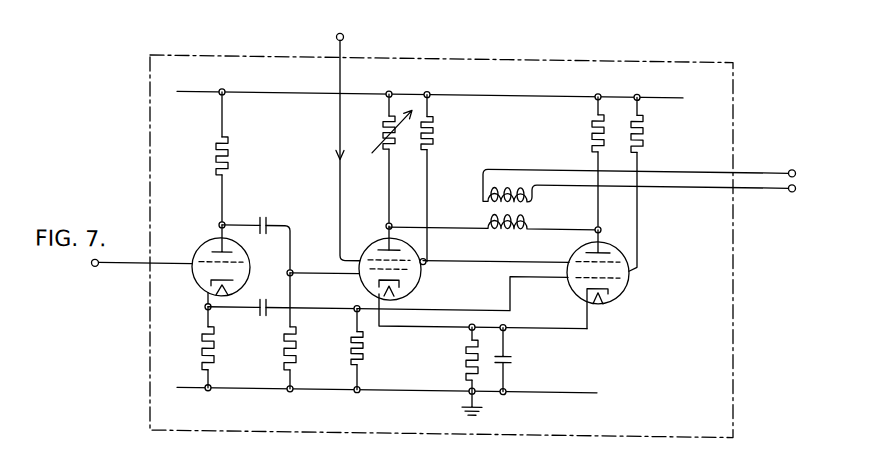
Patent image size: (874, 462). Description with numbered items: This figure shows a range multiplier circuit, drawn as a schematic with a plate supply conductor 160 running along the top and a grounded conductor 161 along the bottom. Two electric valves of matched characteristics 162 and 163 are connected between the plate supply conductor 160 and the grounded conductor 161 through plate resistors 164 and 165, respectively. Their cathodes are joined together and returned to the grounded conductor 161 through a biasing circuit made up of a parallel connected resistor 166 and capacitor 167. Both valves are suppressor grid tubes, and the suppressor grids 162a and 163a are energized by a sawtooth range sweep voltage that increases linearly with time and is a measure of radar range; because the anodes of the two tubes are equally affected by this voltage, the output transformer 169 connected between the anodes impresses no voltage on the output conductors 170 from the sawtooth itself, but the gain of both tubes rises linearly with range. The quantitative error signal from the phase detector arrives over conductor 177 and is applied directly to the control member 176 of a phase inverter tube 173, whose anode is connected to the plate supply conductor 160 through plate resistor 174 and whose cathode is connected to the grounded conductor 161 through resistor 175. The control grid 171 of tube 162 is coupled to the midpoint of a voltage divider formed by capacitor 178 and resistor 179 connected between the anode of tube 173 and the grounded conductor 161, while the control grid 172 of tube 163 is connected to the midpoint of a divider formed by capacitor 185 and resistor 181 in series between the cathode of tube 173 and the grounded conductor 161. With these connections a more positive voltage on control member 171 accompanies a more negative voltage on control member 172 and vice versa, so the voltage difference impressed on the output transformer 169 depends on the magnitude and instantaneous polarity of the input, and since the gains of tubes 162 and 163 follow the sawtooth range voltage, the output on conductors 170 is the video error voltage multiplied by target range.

The plate supply conductor 160 is at (280, 91).
The grounded conductor 161 is at (248, 388).
The electric valve 162 is at (422, 280).
The suppressor grid 162a is at (373, 250).
The electric valve 163 is at (622, 284).
The suppressor grid 163a is at (573, 254).
The plate resistor 164 is at (393, 178).
The plate resistor 165 is at (590, 130).
The resistor 166 is at (463, 363).
The capacitor 167 is at (511, 353).
The output transformer 169 is at (488, 201).
The output conductors 170 is at (757, 179).
The control grid 171 is at (368, 274).
The control grid 172 is at (577, 278).
The phase inverter tube 173 is at (246, 252).
The plate resistor 174 is at (232, 151).
The resistor 175 is at (203, 352).
The control member 176 is at (205, 271).
The conductor 177 is at (118, 268).
The capacitor 178 is at (254, 232).
The resistor 179 is at (296, 352).
The resistor 181 is at (364, 345).
The capacitor 185 is at (282, 324).